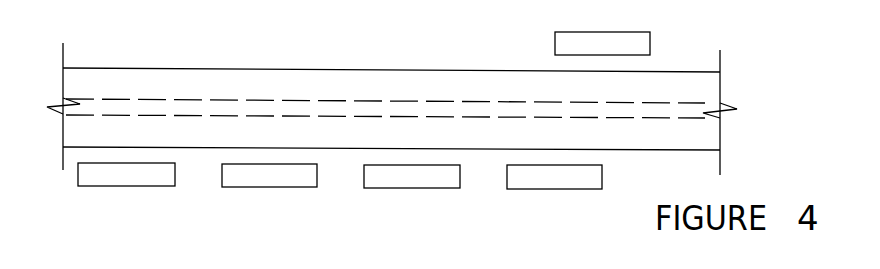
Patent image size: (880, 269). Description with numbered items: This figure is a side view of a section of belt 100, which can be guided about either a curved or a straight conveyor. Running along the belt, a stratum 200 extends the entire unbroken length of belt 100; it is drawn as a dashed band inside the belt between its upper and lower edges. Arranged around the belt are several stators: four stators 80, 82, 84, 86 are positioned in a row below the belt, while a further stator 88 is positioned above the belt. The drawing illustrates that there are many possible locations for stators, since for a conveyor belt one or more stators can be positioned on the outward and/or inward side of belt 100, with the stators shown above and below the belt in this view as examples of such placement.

The belt 100 is at (392, 104).
The stratum 200 is at (385, 76).
The stator 80 is at (126, 194).
The stator 82 is at (269, 194).
The stator 84 is at (412, 195).
The stator 86 is at (554, 195).
The stator 88 is at (602, 27).